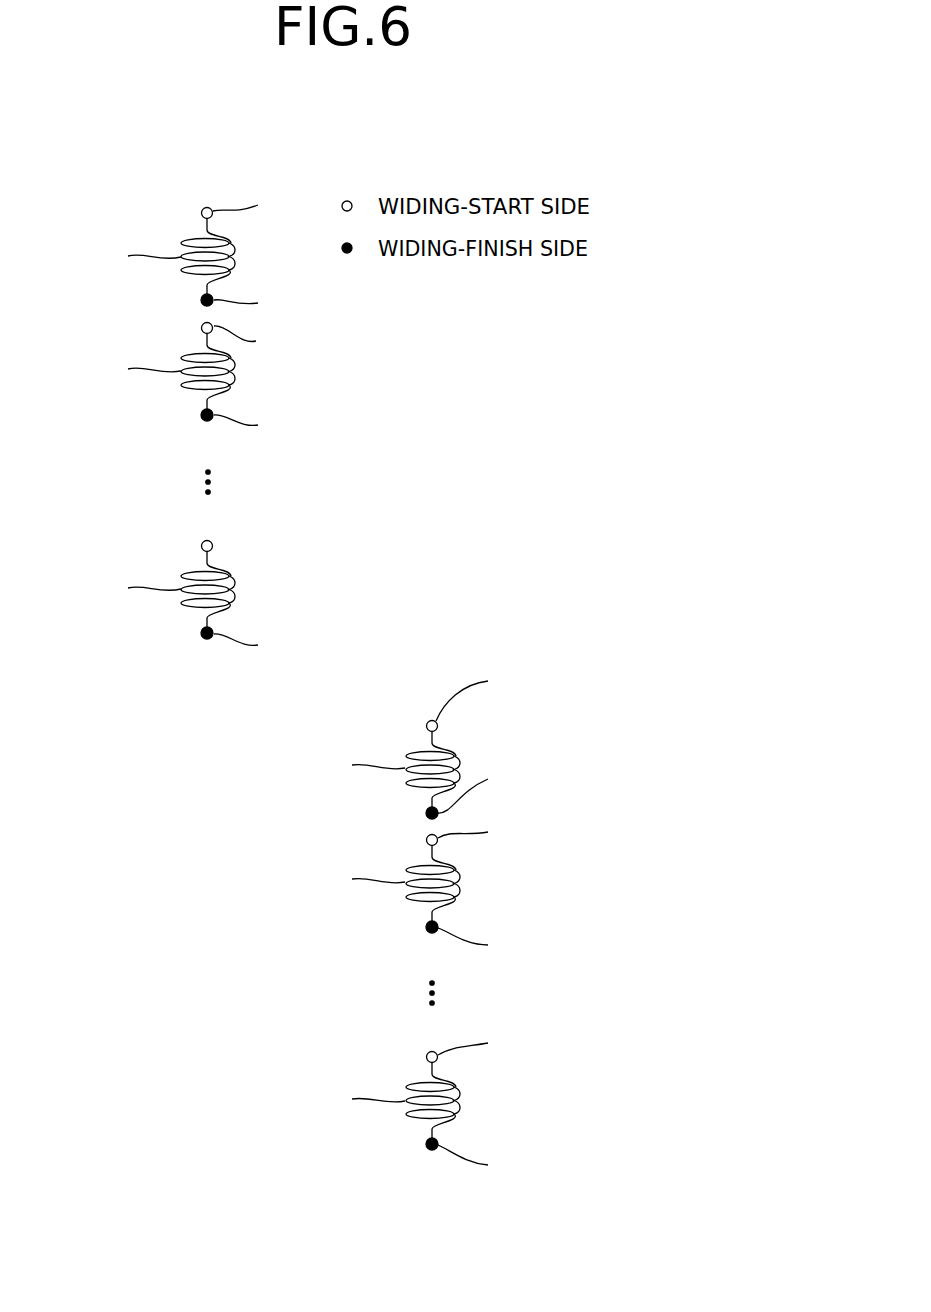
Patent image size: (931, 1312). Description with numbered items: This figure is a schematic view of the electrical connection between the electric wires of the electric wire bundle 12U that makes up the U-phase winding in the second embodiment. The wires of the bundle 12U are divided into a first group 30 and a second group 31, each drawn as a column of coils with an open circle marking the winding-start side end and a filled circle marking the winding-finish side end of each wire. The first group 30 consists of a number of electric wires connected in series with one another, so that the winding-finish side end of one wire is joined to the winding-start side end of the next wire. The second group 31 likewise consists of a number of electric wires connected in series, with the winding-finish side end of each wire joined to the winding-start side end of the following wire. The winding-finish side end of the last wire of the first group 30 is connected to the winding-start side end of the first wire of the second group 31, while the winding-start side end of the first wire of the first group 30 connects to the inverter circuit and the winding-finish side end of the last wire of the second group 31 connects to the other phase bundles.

The electric wire bundle 12U is at (338, 167).
The first group 30 is at (127, 212).
The second group 31 is at (519, 747).